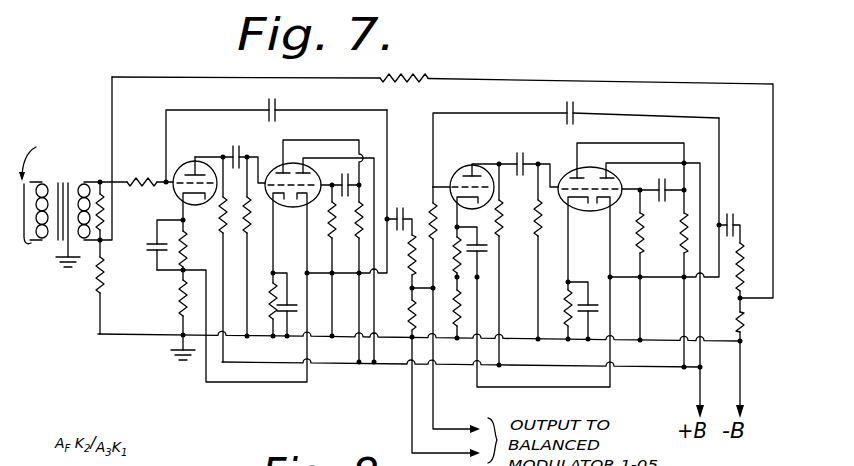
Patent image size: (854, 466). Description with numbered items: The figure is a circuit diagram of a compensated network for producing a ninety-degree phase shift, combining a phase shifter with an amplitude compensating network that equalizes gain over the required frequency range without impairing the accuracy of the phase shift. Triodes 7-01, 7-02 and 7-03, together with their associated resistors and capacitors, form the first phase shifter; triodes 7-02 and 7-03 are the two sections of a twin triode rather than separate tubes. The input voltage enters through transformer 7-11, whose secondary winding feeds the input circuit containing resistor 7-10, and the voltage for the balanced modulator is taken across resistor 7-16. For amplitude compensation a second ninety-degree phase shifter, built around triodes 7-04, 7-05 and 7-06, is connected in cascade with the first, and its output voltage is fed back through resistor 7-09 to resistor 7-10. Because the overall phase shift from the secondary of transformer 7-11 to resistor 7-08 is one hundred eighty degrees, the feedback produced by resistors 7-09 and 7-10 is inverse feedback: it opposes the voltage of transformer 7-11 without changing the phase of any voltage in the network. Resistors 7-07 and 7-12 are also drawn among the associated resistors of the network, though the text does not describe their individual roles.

The triode 7-01 is at (183, 163).
The triode 7-02 is at (275, 163).
The triode 7-03 is at (319, 179).
The triode 7-04 is at (458, 170).
The triode 7-05 is at (567, 170).
The triode 7-06 is at (631, 170).
The resistor 7-07 is at (748, 263).
The resistor 7-08 is at (744, 320).
The resistor 7-09 is at (418, 78).
The resistor 7-10 is at (104, 275).
The transformer 7-11 is at (61, 207).
The resistor 7-12 is at (409, 268).
The resistor 7-16 is at (395, 318).